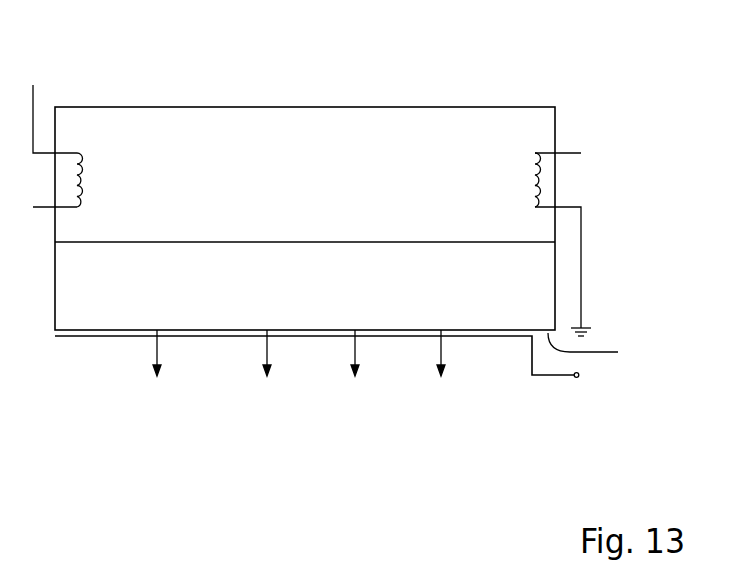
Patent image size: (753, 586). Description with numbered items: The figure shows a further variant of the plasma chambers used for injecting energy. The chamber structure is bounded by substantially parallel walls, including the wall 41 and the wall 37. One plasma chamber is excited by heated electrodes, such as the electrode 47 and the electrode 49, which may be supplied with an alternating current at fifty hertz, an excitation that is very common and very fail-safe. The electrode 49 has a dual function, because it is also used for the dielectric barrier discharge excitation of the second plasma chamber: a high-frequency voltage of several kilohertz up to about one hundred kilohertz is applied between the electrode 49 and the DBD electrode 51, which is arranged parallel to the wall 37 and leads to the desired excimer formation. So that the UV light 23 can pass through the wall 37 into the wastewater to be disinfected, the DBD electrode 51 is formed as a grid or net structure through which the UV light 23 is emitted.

The wall 41 is at (423, 107).
The electrode 47 is at (78, 152).
The electrode 49 is at (535, 152).
The UV light 23 is at (155, 353).
The wall 37 is at (597, 349).
The DBD electrode 51 is at (483, 337).